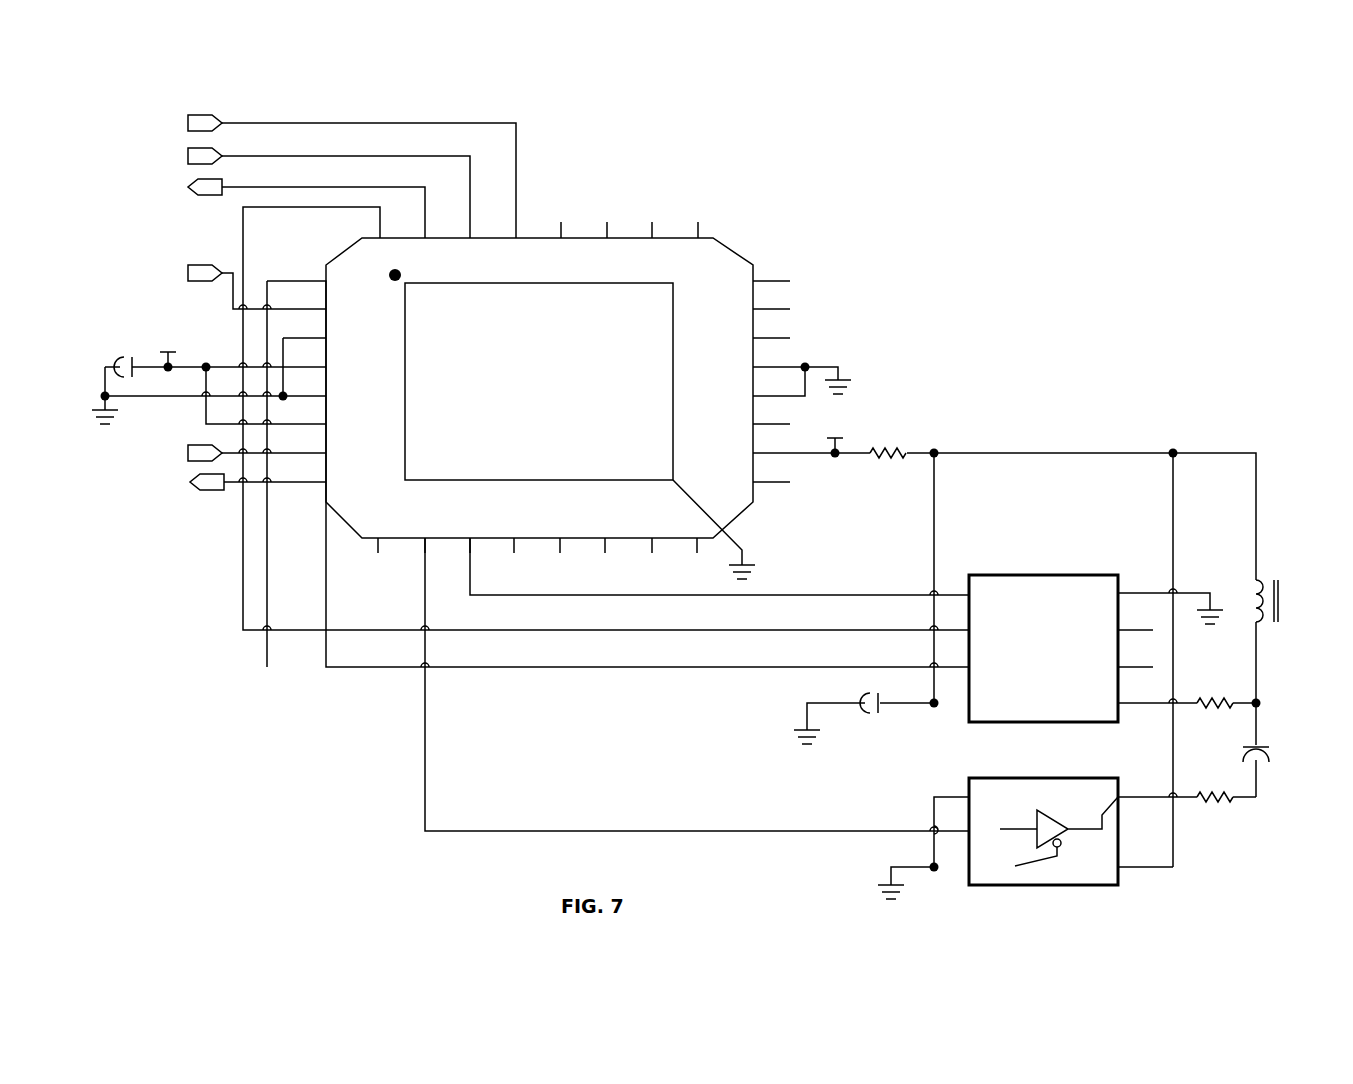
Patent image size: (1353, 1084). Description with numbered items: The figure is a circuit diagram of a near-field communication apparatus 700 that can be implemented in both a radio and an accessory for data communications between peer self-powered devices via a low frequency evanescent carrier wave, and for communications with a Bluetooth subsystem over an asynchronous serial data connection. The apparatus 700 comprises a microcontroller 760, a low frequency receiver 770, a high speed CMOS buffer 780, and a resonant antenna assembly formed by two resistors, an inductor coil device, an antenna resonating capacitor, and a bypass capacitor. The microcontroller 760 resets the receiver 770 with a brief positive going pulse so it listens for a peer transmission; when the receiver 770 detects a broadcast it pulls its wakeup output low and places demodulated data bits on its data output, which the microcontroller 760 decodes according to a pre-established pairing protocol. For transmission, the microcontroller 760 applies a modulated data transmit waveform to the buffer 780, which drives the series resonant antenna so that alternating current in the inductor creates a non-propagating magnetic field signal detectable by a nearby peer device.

The near-field communication apparatus 700 is at (704, 505).
The microcontroller U1 760 is at (730, 250).
The low frequency receiver U2 770 is at (1090, 575).
The high speed CMOS buffer U3 780 is at (1090, 778).